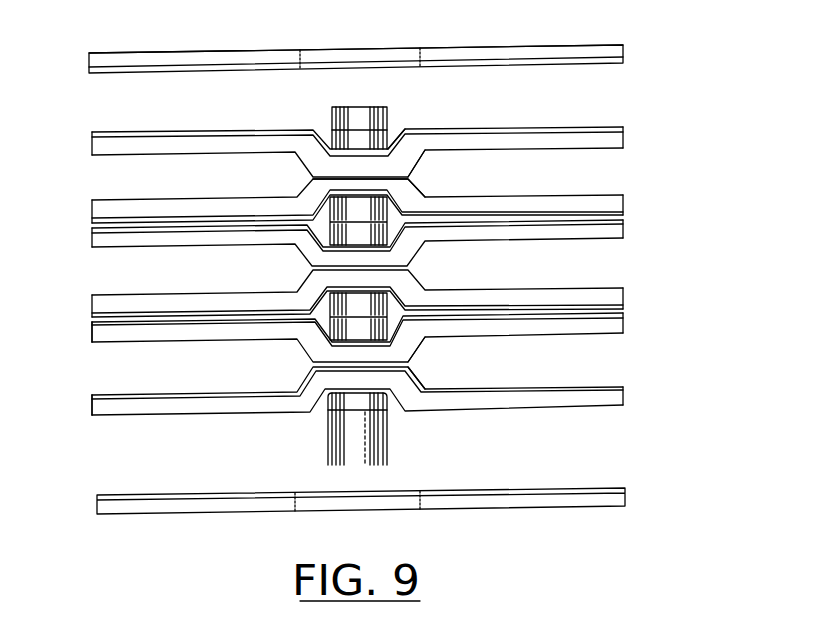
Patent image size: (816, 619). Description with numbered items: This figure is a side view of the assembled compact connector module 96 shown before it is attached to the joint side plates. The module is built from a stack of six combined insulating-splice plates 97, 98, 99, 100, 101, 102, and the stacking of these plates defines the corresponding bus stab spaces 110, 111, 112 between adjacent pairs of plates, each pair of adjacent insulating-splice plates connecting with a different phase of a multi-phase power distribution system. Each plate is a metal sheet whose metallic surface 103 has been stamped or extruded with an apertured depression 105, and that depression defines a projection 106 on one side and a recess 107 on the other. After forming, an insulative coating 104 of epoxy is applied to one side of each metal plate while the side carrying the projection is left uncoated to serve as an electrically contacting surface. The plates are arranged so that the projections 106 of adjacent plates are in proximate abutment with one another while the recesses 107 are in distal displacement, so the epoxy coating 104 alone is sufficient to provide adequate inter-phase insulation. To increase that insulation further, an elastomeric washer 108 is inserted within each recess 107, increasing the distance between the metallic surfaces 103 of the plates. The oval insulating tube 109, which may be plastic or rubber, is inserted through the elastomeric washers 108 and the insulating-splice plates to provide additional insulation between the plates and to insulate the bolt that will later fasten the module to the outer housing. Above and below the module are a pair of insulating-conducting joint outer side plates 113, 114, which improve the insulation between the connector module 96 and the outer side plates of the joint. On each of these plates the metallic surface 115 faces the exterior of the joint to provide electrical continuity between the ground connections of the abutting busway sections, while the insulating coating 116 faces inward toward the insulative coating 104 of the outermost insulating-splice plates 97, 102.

The compact connector module 96 is at (748, 261).
The insulating-splice plate 97 is at (623, 143).
The insulating-splice plate 98 is at (623, 199).
The insulating-splice plate 99 is at (623, 233).
The insulating-splice plate 100 is at (623, 295).
The insulating-splice plate 101 is at (623, 332).
The insulating-splice plate 102 is at (626, 395).
The metallic surface 103 is at (90, 386).
The insulative coating 104 is at (623, 128).
The apertured depression 105 is at (425, 189).
The projection 106 is at (419, 376).
The recess 107 is at (330, 246).
The elastomeric washer 108 is at (390, 296).
The oval insulating tube 109 is at (388, 450).
The bus stab space 110 is at (210, 190).
The bus stab space 111 is at (213, 283).
The bus stab space 112 is at (210, 378).
The insulating-conducting joint outer side plate 113 is at (636, 51).
The insulating-conducting joint outer side plate 114 is at (636, 500).
The metallic surface 115 is at (88, 58).
The insulating coating 116 is at (88, 71).